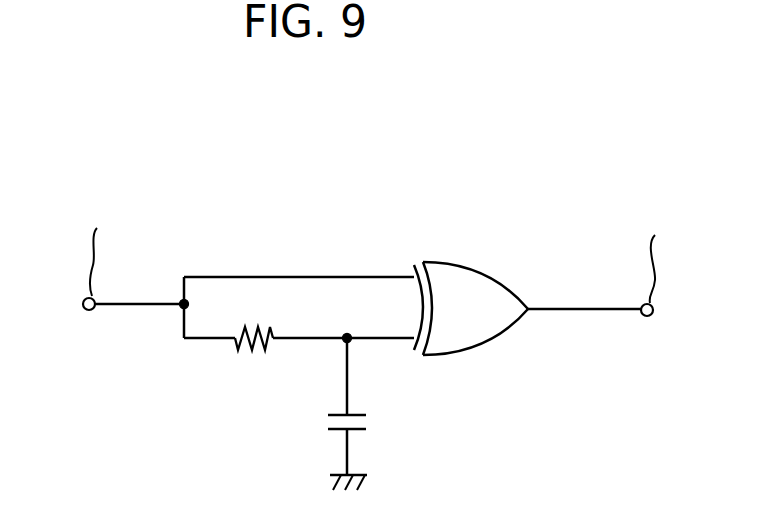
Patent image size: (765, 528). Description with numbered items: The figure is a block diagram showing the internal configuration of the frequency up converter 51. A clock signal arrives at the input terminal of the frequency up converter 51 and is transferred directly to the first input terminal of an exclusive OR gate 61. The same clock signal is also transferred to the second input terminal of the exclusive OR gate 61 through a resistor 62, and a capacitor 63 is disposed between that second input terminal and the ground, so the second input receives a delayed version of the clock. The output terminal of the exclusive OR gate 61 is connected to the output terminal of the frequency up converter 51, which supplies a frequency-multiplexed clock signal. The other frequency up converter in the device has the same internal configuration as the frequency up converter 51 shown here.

The frequency up converter 51 is at (523, 133).
The exclusive OR gate 61 is at (477, 270).
The resistor 62 is at (262, 348).
The capacitor 63 is at (358, 414).